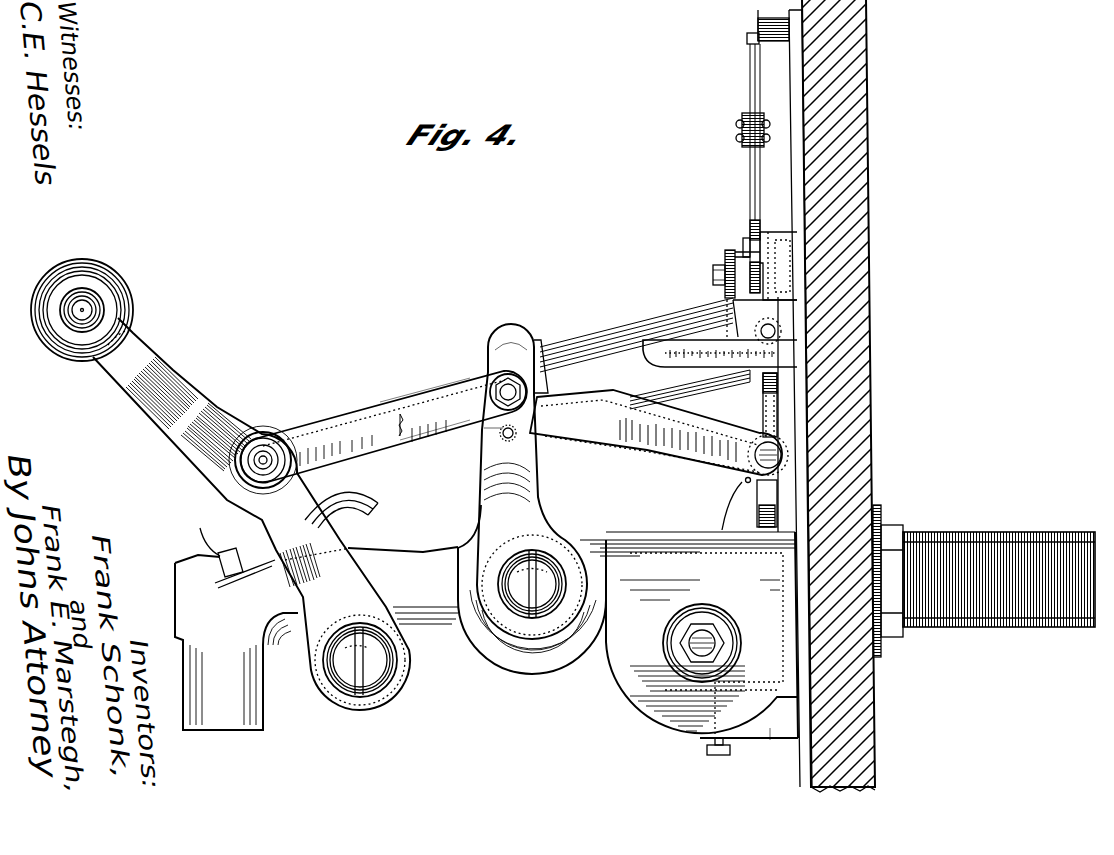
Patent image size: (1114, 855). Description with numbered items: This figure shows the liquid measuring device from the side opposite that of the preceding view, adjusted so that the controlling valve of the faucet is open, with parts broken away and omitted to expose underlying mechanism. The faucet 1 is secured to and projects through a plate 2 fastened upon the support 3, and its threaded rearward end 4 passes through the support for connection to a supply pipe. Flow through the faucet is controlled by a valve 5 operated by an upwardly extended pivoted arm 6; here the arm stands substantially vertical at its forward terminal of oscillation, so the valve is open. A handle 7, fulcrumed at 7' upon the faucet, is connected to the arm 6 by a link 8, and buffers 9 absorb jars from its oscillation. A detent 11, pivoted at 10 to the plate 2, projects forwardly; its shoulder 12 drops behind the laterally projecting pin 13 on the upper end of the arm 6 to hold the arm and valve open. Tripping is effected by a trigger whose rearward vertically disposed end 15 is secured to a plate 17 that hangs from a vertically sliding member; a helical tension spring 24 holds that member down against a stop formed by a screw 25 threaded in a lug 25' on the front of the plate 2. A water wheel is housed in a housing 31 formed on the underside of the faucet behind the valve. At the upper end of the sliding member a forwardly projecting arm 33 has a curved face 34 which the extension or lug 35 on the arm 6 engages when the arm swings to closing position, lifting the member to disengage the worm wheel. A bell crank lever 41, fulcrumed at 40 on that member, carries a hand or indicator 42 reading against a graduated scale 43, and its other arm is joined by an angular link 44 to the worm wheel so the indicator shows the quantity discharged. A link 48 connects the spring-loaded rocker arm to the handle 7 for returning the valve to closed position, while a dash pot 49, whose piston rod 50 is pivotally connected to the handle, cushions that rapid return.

The faucet 1 is at (431, 612).
The plate 2 is at (796, 170).
The support 3 is at (840, 178).
The rearward end of the faucet 4 is at (980, 562).
The valve 5 is at (580, 522).
The pivoted arm 6 is at (497, 453).
The handle 7 is at (220, 484).
The fulcrum of the handle 7' is at (360, 681).
The link 8 is at (403, 417).
The buffers 9 is at (210, 540).
The pivot of the detent 10 is at (790, 453).
The detent 11 is at (673, 476).
The shoulder 12 is at (525, 439).
The laterally projecting pin 13 is at (503, 434).
The rearward vertically disposed end of the trigger 15 is at (760, 487).
The plate 17 is at (770, 408).
The helical tension spring 24 is at (704, 630).
The screw 25 is at (702, 764).
The lug 25' is at (761, 753).
The housing 31 is at (622, 668).
The forwardly projecting arm 33 is at (687, 340).
The curved face 34 is at (651, 352).
The extension or lug 35 is at (510, 332).
The fulcrum of the bell crank lever 40 is at (743, 249).
The bell crank lever 41 is at (750, 176).
The hand or indicator 42 is at (750, 62).
The graduated scale 43 is at (765, 18).
The angular link 44 is at (724, 252).
The link 48 is at (322, 437).
The dash pot 49 is at (628, 352).
The piston rod 50 is at (429, 440).